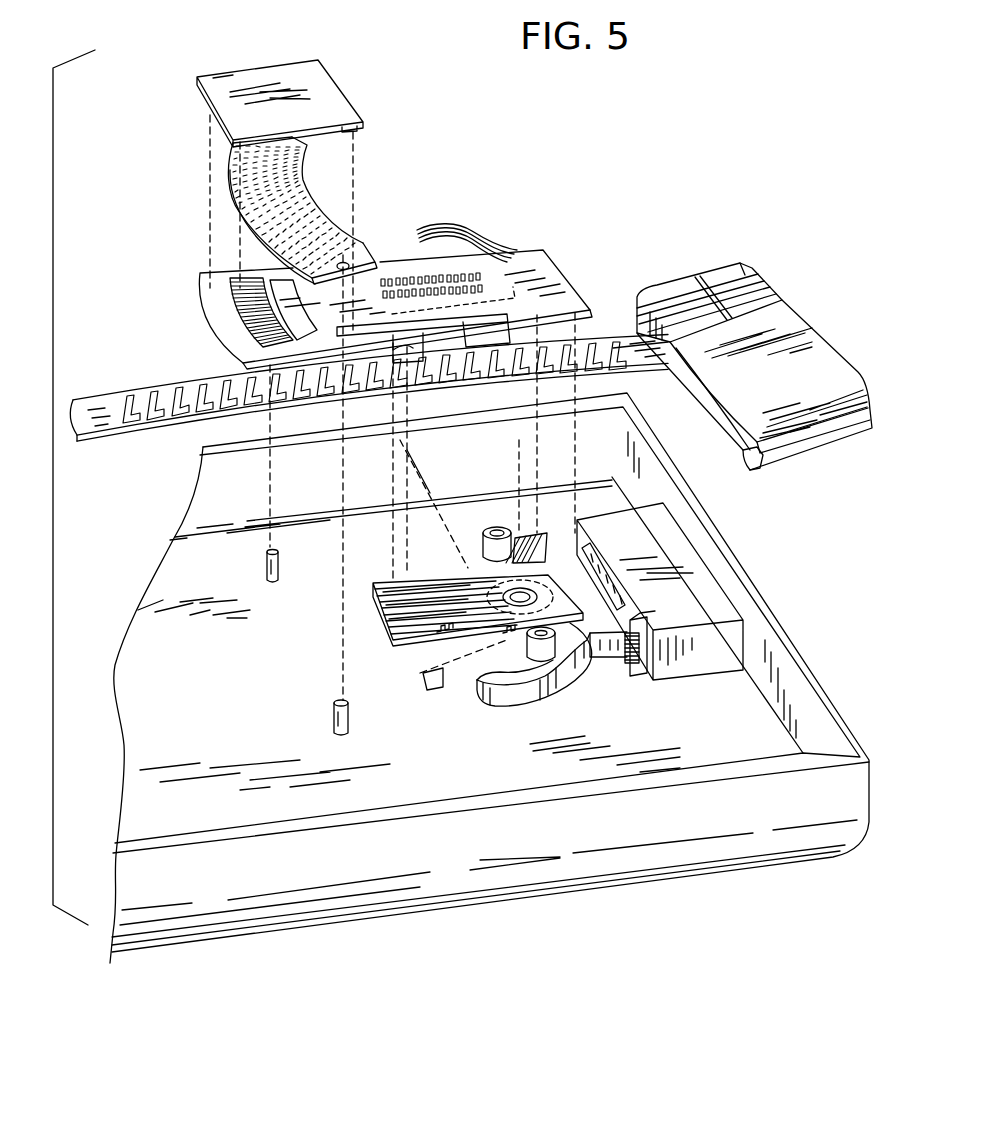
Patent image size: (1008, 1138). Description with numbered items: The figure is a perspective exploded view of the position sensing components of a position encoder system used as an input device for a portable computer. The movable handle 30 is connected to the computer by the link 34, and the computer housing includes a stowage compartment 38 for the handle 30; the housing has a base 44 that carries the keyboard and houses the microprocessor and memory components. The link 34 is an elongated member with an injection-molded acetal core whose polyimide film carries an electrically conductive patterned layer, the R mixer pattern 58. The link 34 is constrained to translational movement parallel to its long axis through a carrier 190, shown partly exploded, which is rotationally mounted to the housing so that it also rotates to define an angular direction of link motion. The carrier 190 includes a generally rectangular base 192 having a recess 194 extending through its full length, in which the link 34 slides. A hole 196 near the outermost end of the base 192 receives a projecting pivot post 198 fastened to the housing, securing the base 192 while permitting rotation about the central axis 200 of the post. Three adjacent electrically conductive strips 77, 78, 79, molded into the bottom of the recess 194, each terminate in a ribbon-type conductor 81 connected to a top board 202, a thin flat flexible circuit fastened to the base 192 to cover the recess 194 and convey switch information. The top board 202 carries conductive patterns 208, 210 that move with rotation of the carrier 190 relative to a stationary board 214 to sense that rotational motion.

The handle 30 is at (810, 311).
The link 34 is at (638, 373).
The stowage compartment 38 is at (705, 645).
The base 44 is at (790, 647).
The R mixer pattern 58 is at (196, 396).
The electrically conductive strip 77 is at (440, 597).
The electrically conductive strip 78 is at (453, 607).
The electrically conductive strip 79 is at (467, 613).
The ribbon-type conductor 81 is at (468, 232).
The carrier 190 is at (372, 636).
The base 192 is at (578, 632).
The recess 194 is at (458, 577).
The hole 196 is at (522, 592).
The pivot post 198 is at (519, 593).
The central axis 200 is at (525, 480).
The top board 202 is at (508, 275).
The conductive pattern 208 is at (253, 297).
The conductive pattern 210 is at (288, 292).
The stationary board 214 is at (309, 199).